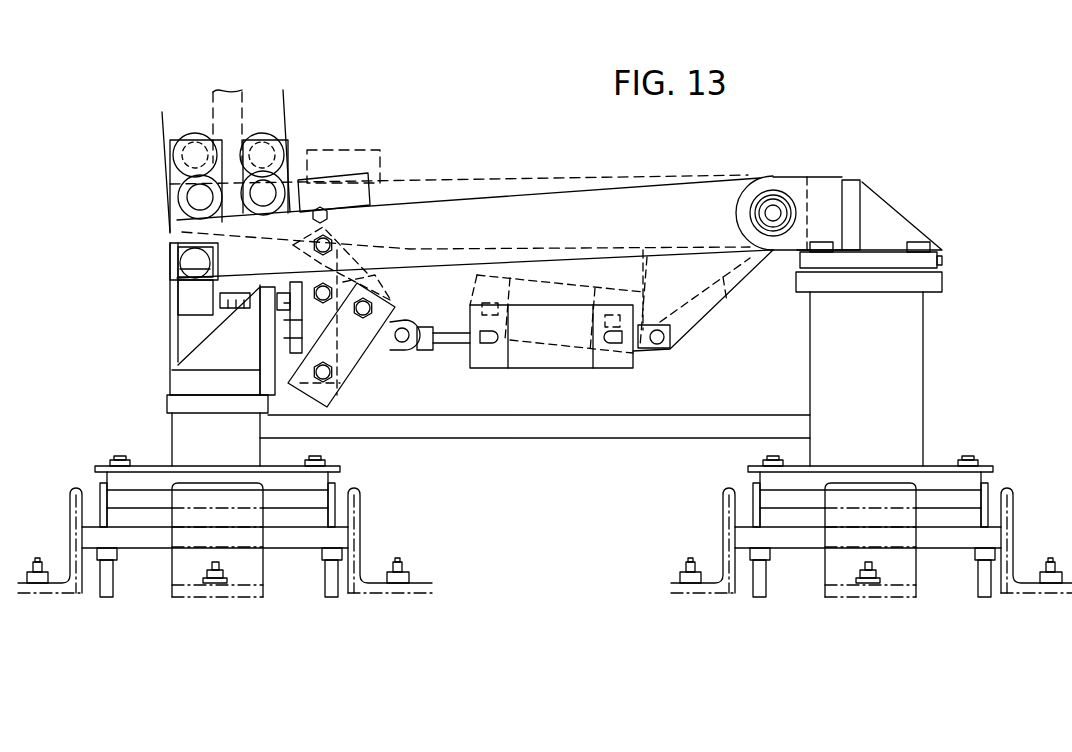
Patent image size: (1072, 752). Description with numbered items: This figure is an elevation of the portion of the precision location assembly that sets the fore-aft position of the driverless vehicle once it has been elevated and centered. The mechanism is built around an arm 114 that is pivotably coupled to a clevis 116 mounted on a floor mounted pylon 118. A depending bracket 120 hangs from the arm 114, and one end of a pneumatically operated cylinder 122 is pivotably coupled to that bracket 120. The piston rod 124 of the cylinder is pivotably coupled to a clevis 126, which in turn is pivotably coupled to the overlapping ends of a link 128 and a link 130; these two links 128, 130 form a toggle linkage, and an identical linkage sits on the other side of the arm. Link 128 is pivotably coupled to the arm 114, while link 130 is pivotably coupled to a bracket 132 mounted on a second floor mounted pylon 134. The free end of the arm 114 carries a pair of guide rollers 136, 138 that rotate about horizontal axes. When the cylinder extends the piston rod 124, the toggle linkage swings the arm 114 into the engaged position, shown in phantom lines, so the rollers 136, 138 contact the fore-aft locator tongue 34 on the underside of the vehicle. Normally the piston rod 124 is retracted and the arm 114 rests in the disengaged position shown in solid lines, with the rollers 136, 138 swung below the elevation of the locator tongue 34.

The fore-aft locator tongue member 34 is at (243, 91).
The arm 114 is at (663, 207).
The clevis 116 is at (828, 193).
The floor mounted pylon 118 is at (910, 380).
The depending bracket 120 is at (720, 282).
The pneumatically operated cylinder 122 is at (578, 362).
The piston rod 124 is at (472, 368).
The clevis 126 is at (386, 345).
The link 128 is at (377, 260).
The link 130 is at (333, 403).
The bracket 132 is at (175, 371).
The floor mounted pylon 134 is at (183, 435).
The guide roller 136 is at (183, 196).
The guide roller 138 is at (272, 172).